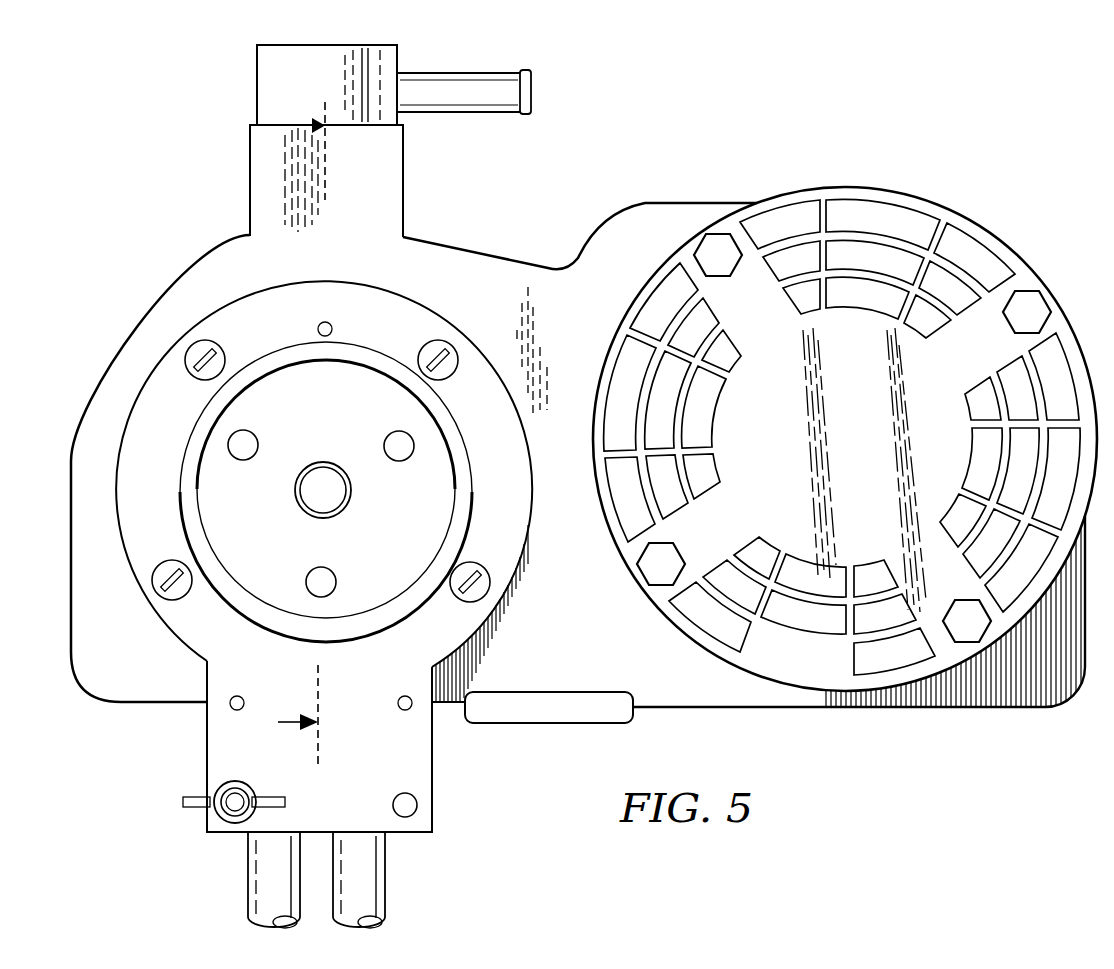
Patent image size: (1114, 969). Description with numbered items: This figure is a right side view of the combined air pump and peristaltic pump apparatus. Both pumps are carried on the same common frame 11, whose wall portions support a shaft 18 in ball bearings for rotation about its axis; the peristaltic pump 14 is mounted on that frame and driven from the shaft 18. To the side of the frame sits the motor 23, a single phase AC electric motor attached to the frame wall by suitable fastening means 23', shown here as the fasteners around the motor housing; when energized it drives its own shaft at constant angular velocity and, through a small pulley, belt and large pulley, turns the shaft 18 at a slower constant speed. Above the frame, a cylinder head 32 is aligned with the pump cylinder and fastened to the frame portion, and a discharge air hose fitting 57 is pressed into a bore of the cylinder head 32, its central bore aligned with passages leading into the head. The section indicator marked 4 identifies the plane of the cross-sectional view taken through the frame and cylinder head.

The frame 11 is at (167, 293).
The peristaltic pump 14 is at (193, 720).
The shaft 18 is at (364, 497).
The motor 23 is at (781, 455).
The fastening means 23' is at (843, 432).
The cylinder head 32 is at (316, 92).
The discharge air hose fitting 57 is at (465, 112).
The section line 4 is at (311, 433).